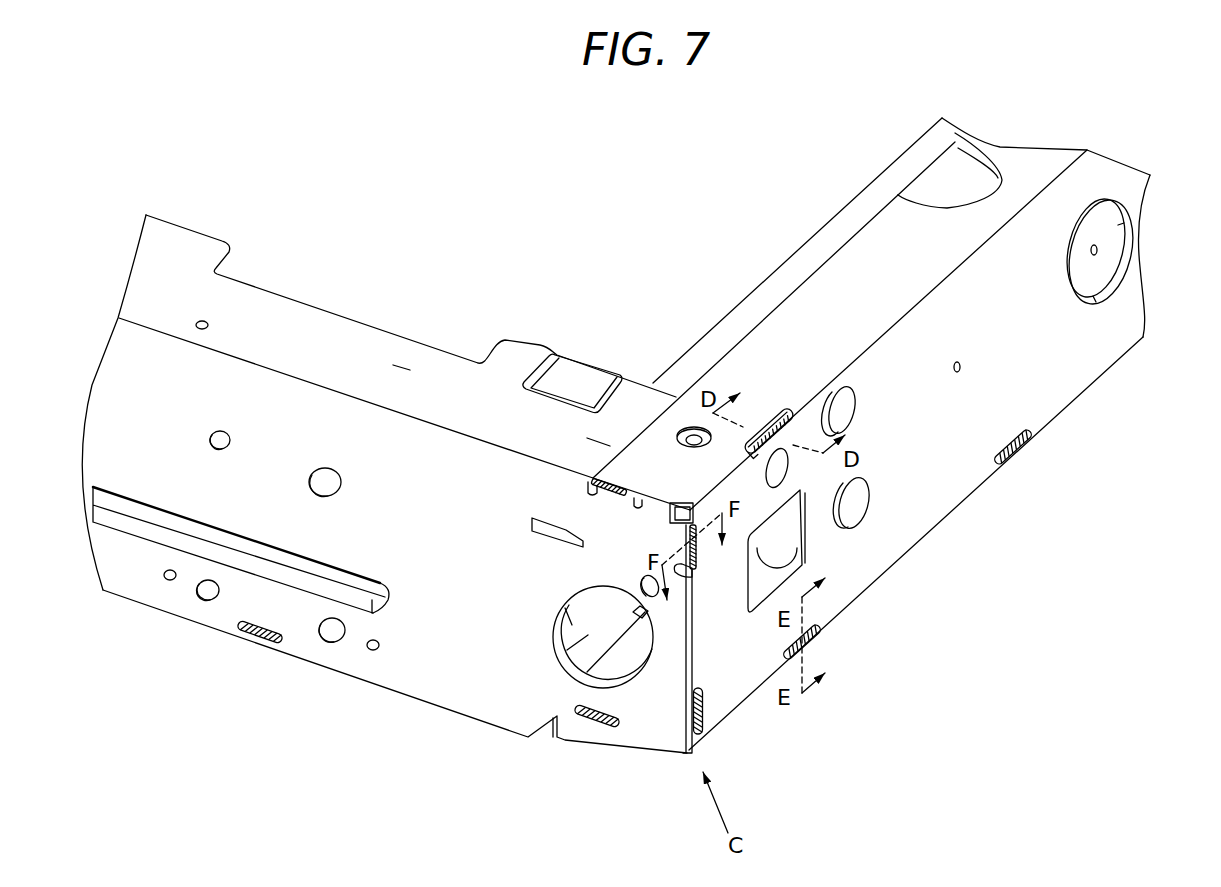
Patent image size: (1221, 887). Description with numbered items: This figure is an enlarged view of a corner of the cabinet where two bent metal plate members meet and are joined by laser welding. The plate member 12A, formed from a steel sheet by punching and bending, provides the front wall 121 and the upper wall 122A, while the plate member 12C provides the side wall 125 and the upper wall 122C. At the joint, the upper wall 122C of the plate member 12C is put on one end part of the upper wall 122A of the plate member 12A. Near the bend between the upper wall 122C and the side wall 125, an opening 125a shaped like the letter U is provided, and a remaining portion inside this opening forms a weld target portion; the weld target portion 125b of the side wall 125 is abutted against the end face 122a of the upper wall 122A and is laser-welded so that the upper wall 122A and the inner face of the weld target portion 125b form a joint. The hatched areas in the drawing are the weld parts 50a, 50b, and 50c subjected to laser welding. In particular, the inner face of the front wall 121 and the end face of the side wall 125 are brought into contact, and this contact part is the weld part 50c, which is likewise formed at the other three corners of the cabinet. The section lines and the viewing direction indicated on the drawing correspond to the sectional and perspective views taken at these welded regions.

The plate member 12A is at (140, 613).
The plate member 12C is at (923, 563).
The front wall 121 is at (437, 692).
The end face 122a is at (195, 228).
The upper wall 122A is at (455, 362).
The upper wall 122C is at (800, 295).
The side wall 125 is at (1110, 347).
The opening 125a is at (768, 410).
The weld target portion 125b is at (743, 440).
The weld part 50a is at (790, 448).
The weld part 50b is at (248, 640).
The weld part 50c is at (608, 488).